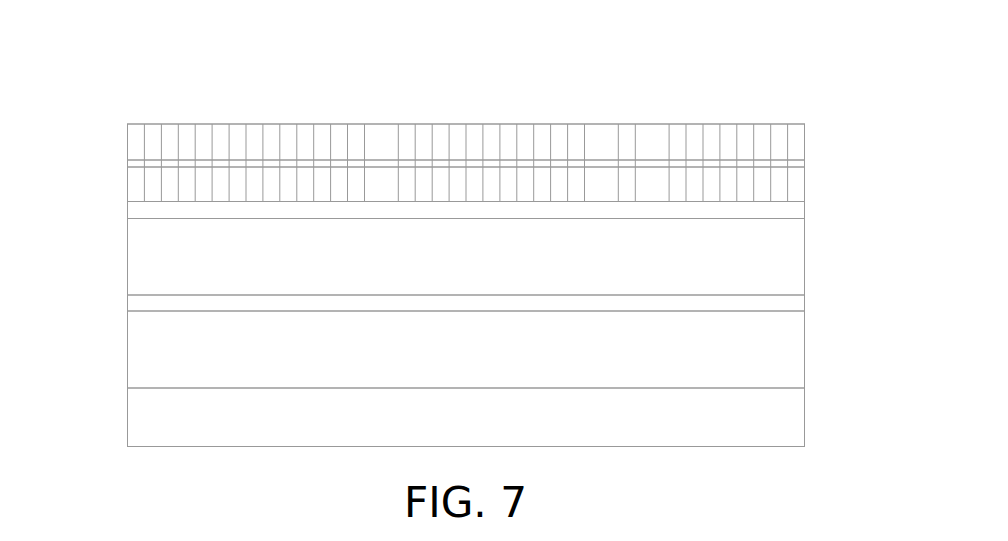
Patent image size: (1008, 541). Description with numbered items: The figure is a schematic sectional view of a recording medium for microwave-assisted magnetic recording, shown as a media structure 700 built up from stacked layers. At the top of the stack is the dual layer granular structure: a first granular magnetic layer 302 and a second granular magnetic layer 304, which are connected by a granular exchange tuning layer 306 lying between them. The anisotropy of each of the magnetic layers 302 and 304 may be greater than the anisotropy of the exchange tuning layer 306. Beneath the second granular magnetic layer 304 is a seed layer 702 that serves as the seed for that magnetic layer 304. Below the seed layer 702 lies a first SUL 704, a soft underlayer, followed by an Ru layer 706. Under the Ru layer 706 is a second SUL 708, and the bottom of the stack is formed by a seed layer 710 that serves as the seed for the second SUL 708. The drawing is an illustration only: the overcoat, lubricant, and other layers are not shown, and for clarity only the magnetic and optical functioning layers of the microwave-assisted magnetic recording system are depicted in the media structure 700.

The media structure 700 is at (182, 73).
The first granular magnetic layer 302 is at (805, 142).
The second granular magnetic layer 304 is at (805, 185).
The granular exchange tuning layer 306 is at (127, 163).
The seed layer 702 is at (127, 209).
The first SUL 704 is at (805, 257).
The Ru layer 706 is at (127, 303).
The second SUL 708 is at (805, 350).
The seed layer 710 is at (805, 417).